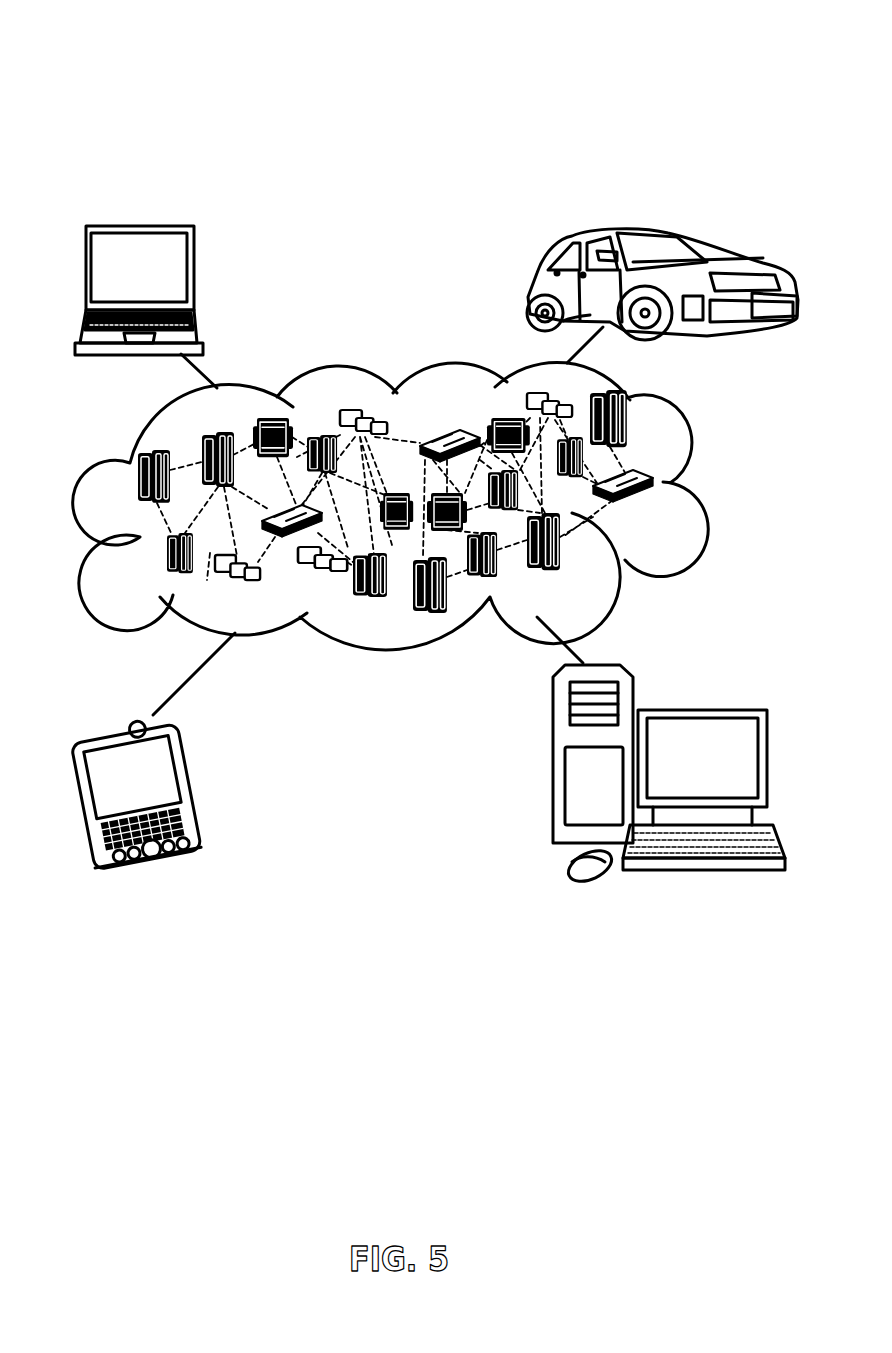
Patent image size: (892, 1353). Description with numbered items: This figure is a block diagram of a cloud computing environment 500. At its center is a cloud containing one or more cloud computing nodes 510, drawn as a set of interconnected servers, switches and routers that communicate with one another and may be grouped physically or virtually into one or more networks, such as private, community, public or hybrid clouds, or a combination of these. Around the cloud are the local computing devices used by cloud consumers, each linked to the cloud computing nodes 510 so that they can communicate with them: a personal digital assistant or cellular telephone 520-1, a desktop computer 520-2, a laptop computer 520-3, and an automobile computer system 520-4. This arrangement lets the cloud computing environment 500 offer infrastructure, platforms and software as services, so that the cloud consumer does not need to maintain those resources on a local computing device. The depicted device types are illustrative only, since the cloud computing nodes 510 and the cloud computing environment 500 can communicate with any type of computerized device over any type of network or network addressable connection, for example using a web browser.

The cloud computing environment 500 is at (324, 82).
The cloud computing nodes 510 is at (662, 513).
The personal digital assistant or cellular telephone 520-1 is at (184, 782).
The desktop computer 520-2 is at (701, 710).
The laptop computer 520-3 is at (195, 272).
The automobile computer system 520-4 is at (525, 285).